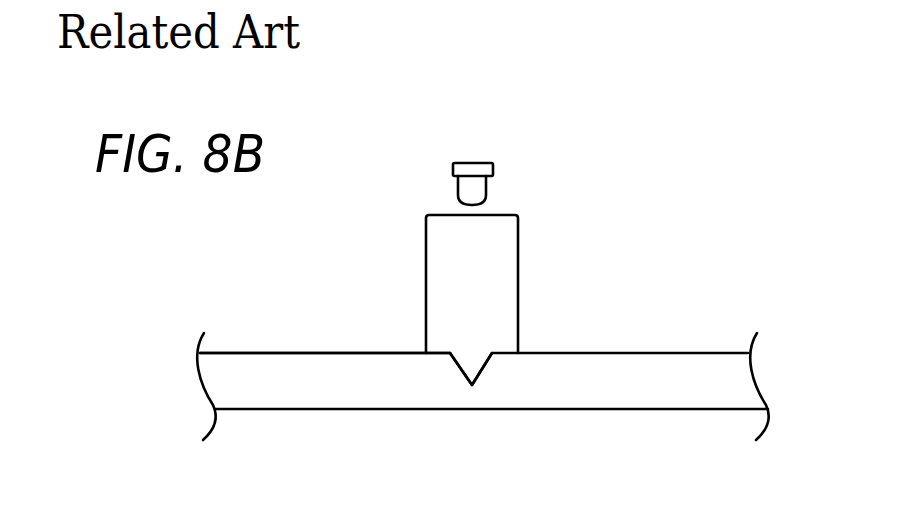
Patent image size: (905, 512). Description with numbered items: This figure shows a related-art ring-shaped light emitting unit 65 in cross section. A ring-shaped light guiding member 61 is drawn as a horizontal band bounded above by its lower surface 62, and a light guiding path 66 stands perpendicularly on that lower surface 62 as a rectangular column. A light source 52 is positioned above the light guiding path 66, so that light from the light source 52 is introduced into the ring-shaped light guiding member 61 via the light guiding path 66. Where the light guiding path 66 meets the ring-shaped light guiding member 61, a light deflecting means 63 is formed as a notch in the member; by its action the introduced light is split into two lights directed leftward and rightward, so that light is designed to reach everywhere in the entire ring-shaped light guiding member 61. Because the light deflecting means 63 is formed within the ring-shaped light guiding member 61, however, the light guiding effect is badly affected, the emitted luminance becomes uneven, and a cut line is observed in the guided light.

The light source 52 is at (490, 183).
The ring-shaped light guiding member 61 is at (688, 368).
The lower surface 62 is at (350, 353).
The light deflecting means 63 is at (486, 356).
The related art structure 65 is at (676, 244).
The light guiding path 66 is at (508, 265).